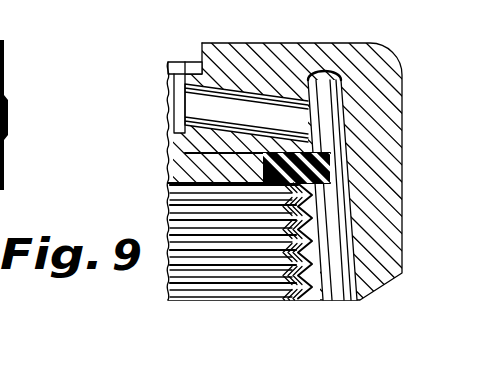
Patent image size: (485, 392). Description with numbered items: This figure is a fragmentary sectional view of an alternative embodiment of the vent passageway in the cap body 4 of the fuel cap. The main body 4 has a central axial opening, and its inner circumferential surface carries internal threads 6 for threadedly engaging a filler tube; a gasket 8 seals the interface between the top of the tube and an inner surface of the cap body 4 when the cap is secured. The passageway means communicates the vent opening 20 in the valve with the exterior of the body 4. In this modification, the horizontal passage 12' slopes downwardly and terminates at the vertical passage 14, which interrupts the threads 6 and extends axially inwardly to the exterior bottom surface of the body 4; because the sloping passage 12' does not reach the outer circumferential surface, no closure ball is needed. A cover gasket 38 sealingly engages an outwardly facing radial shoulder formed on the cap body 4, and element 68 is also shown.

The main body 4 is at (380, 64).
The internal threads 6 is at (203, 200).
The gasket 8 is at (250, 170).
The modified horizontal passage 12' is at (205, 113).
The vertical passage 14 is at (335, 250).
The vent opening 20 is at (7, 103).
The cover gasket 38 is at (185, 62).
The collar 68 is at (165, 37).